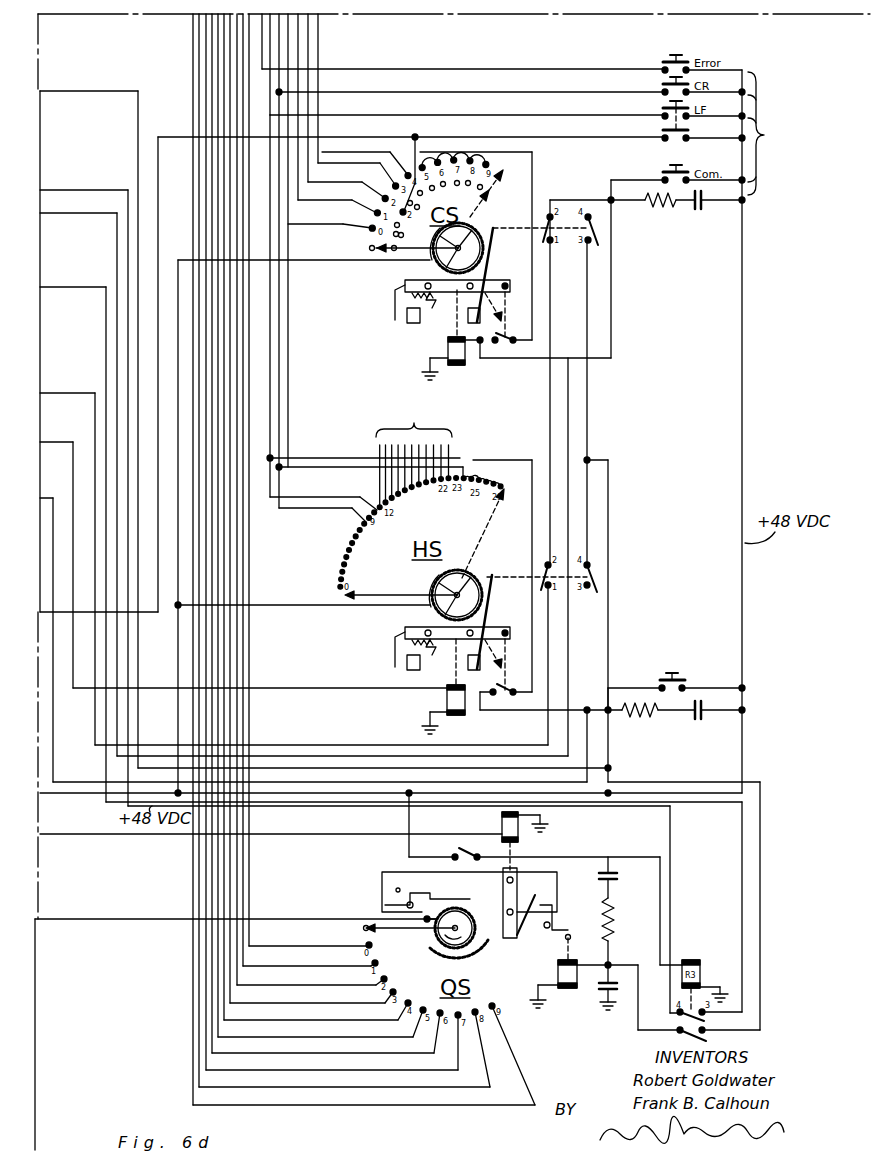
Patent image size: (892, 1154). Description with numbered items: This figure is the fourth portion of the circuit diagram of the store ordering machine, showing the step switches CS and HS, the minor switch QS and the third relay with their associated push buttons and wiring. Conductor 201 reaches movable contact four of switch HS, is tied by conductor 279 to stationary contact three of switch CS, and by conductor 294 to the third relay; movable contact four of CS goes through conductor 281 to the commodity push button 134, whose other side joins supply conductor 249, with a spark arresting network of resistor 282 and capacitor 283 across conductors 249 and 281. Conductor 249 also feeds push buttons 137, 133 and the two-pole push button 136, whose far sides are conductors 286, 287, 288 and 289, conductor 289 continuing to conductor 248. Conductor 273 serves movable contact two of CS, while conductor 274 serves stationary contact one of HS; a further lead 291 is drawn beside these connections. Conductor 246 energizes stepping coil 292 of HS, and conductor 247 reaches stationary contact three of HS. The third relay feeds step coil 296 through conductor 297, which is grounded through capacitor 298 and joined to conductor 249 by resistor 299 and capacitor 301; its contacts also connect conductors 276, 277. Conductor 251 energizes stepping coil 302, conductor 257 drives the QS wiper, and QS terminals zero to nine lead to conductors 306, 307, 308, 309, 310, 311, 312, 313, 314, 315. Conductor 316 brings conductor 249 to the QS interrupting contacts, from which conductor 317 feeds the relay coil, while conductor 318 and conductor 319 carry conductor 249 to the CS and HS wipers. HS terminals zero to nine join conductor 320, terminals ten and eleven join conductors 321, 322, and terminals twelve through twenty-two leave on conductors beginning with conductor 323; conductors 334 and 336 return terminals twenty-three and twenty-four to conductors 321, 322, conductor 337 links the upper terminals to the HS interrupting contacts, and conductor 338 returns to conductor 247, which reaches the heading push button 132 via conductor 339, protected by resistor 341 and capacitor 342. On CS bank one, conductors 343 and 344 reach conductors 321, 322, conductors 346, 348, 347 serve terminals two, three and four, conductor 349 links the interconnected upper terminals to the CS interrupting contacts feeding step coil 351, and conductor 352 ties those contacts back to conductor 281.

The heading push button 132 is at (682, 678).
The push button 133 is at (666, 84).
The commodity push button 134 is at (668, 168).
The push button 136 is at (666, 108).
The push button 137 is at (670, 60).
The conductor 201 is at (102, 91).
The conductor 246 is at (50, 442).
The conductor 247 is at (48, 498).
The conductor 248 is at (170, 137).
The conductor 249 is at (58, 810).
The conductor 251 is at (62, 834).
The conductor 257 is at (62, 919).
The conductor 273 is at (58, 213).
The conductor 274 is at (52, 393).
The conductor 276 is at (58, 287).
The conductor 277 is at (62, 190).
The conductor 279 is at (588, 397).
The conductor 281 is at (602, 190).
The resistor 282 is at (658, 208).
The capacitor 283 is at (698, 209).
The conductor 286 is at (262, 22).
The conductor 287 is at (279, 47).
The conductor 288 is at (270, 34).
The conductor 289 is at (406, 152).
The conductor 291 is at (568, 390).
The stepping coil 292 is at (447, 704).
The conductor 294 is at (666, 780).
The step coil 296 is at (558, 971).
The conductor 297 is at (584, 945).
The capacitor 298 is at (602, 993).
The resistor 299 is at (614, 918).
The capacitor 301 is at (618, 876).
The stepping coil 302 is at (502, 820).
The conductor 306 is at (278, 946).
The conductor 307 is at (284, 965).
The conductor 308 is at (290, 984).
The conductor 309 is at (296, 1002).
The conductor 310 is at (302, 1019).
The conductor 311 is at (308, 1036).
The conductor 312 is at (314, 1052).
The conductor 313 is at (320, 1069).
The conductor 314 is at (326, 1086).
The conductor 315 is at (332, 1104).
The conductor 316 is at (409, 857).
The conductor 317 is at (660, 917).
The conductor 318 is at (176, 260).
The conductor 319 is at (286, 605).
The conductor 320 is at (292, 80).
The conductor 321 is at (281, 338).
The conductor 322 is at (272, 420).
The conductor 323 is at (414, 452).
The conductor 334 is at (319, 467).
The conductor 336 is at (318, 458).
The conductor 337 is at (500, 460).
The conductor 338 is at (510, 711).
The conductor 339 is at (612, 690).
The resistor 341 is at (657, 718).
The capacitor 342 is at (698, 720).
The conductor 343 is at (294, 232).
The conductor 344 is at (306, 208).
The conductor 346 is at (320, 188).
The conductor 347 is at (332, 154).
The conductor 348 is at (323, 170).
The conductor 349 is at (524, 168).
The step coil 351 is at (448, 353).
The conductor 352 is at (611, 318).